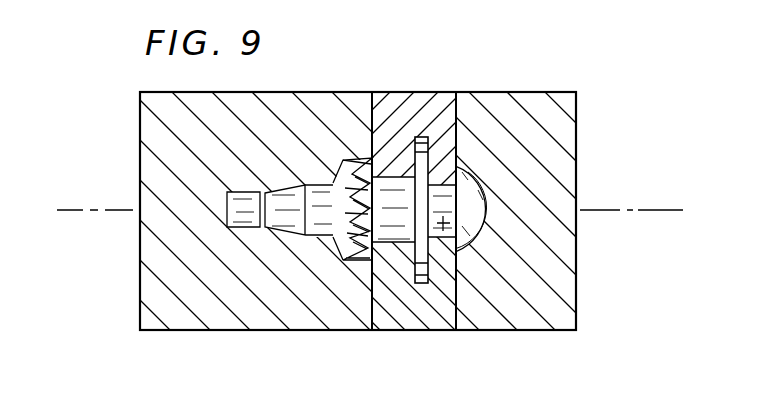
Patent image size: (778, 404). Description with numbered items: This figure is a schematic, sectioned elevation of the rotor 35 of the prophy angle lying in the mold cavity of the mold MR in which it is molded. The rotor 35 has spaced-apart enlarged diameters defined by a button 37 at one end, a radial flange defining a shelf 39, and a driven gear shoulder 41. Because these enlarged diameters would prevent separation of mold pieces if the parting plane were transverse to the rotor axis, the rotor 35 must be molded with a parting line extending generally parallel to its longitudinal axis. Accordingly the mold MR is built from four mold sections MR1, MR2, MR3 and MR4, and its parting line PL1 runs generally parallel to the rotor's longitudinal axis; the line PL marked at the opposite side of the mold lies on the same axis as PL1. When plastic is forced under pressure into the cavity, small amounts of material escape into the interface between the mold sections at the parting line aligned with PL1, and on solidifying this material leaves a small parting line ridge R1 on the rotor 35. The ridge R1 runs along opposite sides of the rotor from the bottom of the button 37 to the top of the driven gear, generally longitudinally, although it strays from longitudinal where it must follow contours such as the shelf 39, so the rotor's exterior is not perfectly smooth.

The mold MR is at (232, 332).
The mold section MR1 is at (578, 98).
The mold section MR2 is at (402, 104).
The mold section MR3 is at (417, 317).
The mold section MR4 is at (153, 247).
The parting line PL is at (660, 210).
The parting line PL1 is at (117, 208).
The driven gear shoulder 41 is at (382, 163).
The rotor 35 is at (360, 262).
The shelf 39 is at (424, 138).
The button 37 is at (472, 185).
The parting line ridge R1 is at (444, 225).